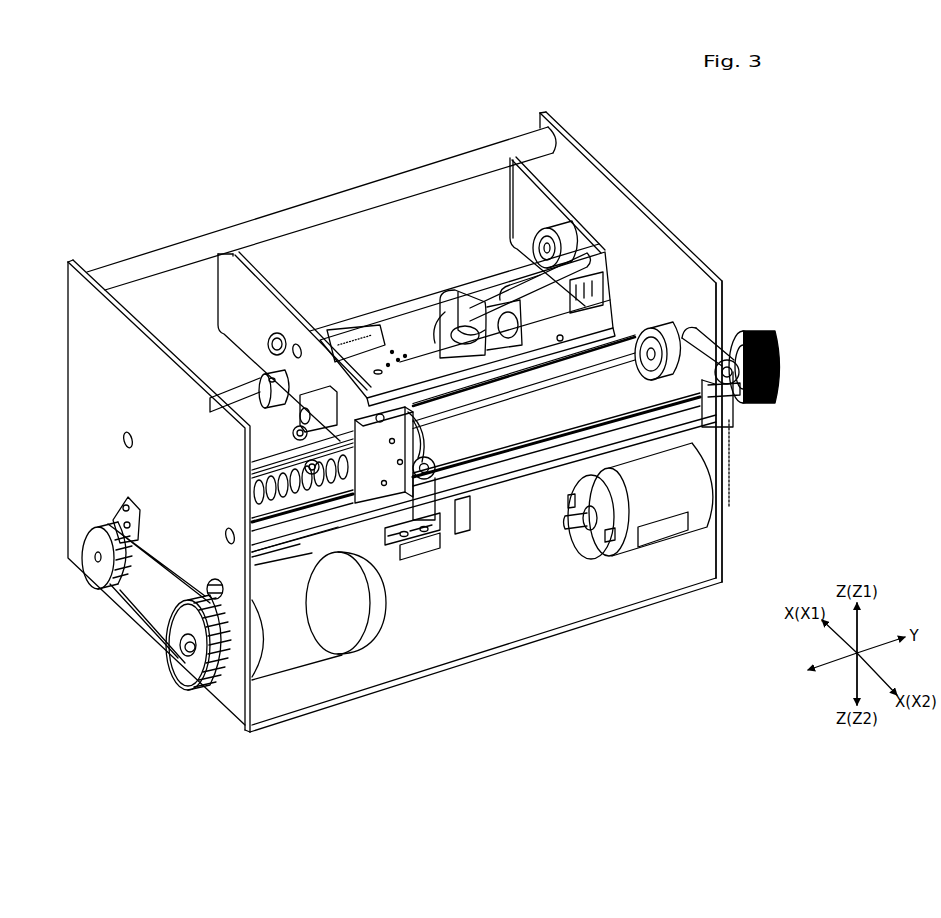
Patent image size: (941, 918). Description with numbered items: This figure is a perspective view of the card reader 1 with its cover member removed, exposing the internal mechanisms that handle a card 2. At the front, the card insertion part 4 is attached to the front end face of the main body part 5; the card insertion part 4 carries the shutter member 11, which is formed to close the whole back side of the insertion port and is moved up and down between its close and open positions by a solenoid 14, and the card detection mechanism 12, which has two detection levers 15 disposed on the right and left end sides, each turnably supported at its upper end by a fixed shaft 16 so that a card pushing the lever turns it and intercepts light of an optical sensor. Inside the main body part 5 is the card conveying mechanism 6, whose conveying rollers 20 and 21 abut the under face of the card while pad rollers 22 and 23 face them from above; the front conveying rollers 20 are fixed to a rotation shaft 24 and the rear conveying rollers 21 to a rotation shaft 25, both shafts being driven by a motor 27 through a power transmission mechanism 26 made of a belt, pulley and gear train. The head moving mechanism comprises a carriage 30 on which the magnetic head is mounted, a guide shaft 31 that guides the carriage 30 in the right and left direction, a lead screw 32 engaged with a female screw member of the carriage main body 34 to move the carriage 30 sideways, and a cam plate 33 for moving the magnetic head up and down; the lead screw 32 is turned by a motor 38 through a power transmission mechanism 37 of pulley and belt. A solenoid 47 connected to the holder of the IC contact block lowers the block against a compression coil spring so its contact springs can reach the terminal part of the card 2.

The card reader 1 is at (799, 139).
The card 2 is at (490, 457).
The card insertion part 4 is at (478, 535).
The main body part 5 is at (644, 163).
The card conveying mechanism 6 is at (695, 285).
The shutter member 11 is at (524, 487).
The card detection mechanism 12 is at (412, 562).
The solenoid 14 is at (362, 417).
The detection lever 15 is at (425, 535).
The fixed shaft 16 is at (422, 458).
The conveying roller 20 is at (667, 400).
The conveying roller 21 is at (293, 421).
The pad roller 22 is at (420, 443).
The pad roller 23 is at (557, 232).
The rotation shaft 24 is at (257, 542).
The rotation shaft 25 is at (242, 392).
The power transmission mechanism 26 is at (752, 433).
The motor 27 is at (652, 545).
The carriage 30 is at (250, 449).
The guide shaft 31 is at (280, 550).
The lead screw 32 is at (257, 513).
The cam plate 33 is at (253, 492).
The carriage main body 34 is at (302, 458).
The power transmission mechanism 37 is at (125, 636).
The motor 38 is at (297, 673).
The solenoid 47 is at (540, 373).